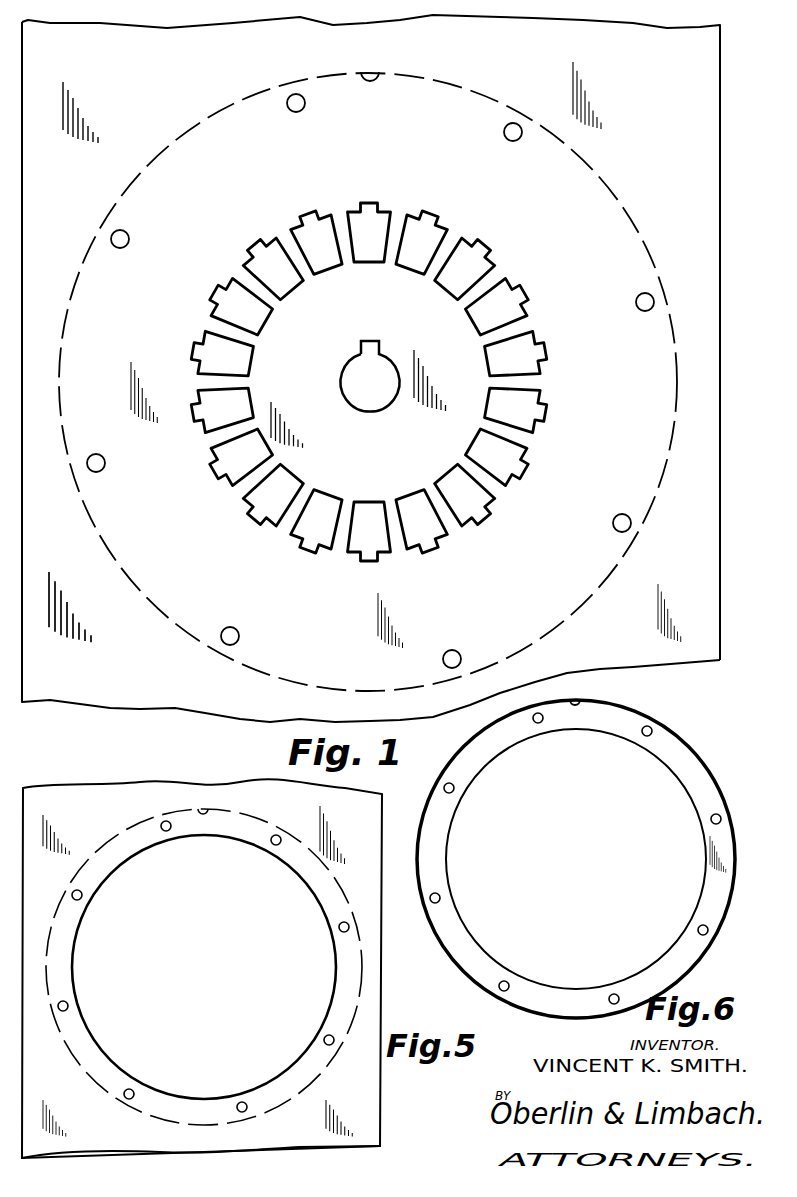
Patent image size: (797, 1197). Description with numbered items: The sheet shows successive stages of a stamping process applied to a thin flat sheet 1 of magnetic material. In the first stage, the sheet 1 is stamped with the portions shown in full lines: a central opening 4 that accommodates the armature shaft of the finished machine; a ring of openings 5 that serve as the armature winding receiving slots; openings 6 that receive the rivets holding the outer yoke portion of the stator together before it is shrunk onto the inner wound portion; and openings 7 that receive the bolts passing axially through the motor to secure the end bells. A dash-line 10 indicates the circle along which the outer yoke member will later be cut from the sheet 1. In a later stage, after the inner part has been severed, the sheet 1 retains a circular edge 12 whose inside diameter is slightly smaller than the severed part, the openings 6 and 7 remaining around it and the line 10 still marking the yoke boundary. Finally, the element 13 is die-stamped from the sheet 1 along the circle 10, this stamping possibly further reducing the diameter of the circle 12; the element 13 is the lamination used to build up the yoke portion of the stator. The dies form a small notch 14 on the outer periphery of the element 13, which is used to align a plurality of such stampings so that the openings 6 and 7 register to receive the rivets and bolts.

In FIG. 1, the flat sheet 1 is at (697, 656).
In FIG. 5, the flat sheet 1 is at (365, 1122).
In FIG. 1, the opening 4 is at (380, 400).
In FIG. 1, the openings 5 is at (528, 347).
In FIG. 1, the openings 6 is at (304, 108).
In FIG. 5, the openings 6 is at (161, 828).
In FIG. 6, the openings 6 is at (533, 720).
In FIG. 1, the openings 7 is at (518, 140).
In FIG. 5, the openings 7 is at (271, 839).
In FIG. 6, the openings 7 is at (642, 730).
In FIG. 1, the dash-line 10 is at (616, 190).
In FIG. 5, the dash-line 10 is at (357, 912).
In FIG. 5, the circle 12 is at (237, 840).
In FIG. 6, the circle 12 is at (512, 745).
In FIG. 6, the element 13 is at (724, 778).
In FIG. 1, the notch 14 is at (372, 67).
In FIG. 5, the notch 14 is at (200, 808).
In FIG. 6, the notch 14 is at (577, 698).